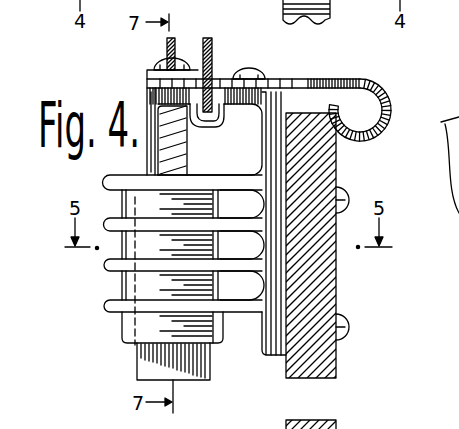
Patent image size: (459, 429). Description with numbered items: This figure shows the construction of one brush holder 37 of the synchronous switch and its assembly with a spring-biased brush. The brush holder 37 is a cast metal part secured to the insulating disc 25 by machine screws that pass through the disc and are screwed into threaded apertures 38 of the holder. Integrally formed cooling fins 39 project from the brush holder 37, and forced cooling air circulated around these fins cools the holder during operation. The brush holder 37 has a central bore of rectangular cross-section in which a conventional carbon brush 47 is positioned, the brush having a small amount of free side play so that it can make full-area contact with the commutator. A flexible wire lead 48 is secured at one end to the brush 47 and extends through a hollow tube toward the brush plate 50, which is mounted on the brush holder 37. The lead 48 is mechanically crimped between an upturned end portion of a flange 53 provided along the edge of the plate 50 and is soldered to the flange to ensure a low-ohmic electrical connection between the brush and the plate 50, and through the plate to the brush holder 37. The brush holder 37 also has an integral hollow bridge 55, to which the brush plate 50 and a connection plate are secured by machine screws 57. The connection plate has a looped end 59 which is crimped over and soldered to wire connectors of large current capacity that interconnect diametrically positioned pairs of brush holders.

The insulating disc 25 is at (332, 286).
The brush holder 37 is at (120, 287).
The threaded aperture 38 is at (262, 348).
The cooling fin 39 is at (170, 182).
The carbon brush 47 is at (140, 370).
The flexible wire lead 48 is at (176, 52).
The brush plate 50 is at (152, 83).
The flange 53 is at (200, 122).
The hollow bridge 55 is at (148, 143).
The machine screw 57 is at (164, 63).
The looped end 59 is at (367, 137).